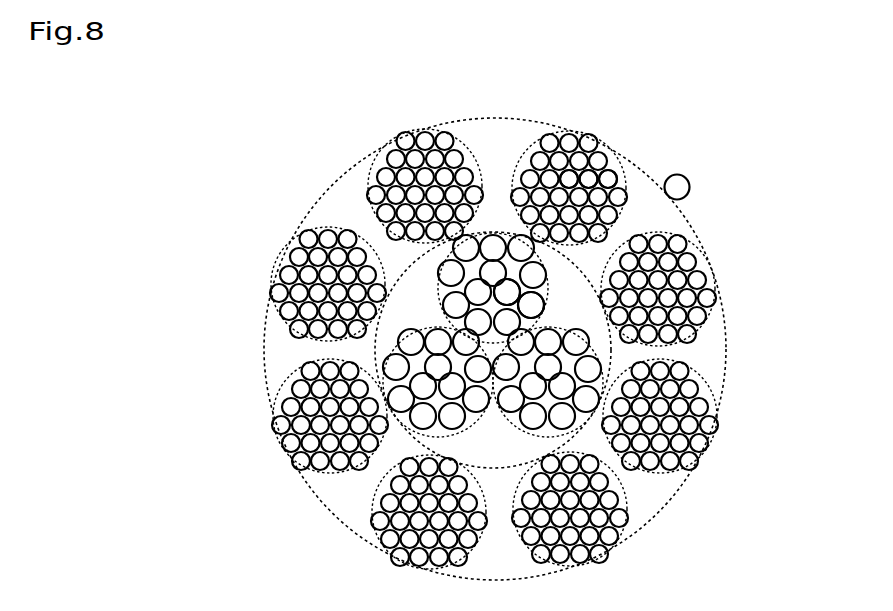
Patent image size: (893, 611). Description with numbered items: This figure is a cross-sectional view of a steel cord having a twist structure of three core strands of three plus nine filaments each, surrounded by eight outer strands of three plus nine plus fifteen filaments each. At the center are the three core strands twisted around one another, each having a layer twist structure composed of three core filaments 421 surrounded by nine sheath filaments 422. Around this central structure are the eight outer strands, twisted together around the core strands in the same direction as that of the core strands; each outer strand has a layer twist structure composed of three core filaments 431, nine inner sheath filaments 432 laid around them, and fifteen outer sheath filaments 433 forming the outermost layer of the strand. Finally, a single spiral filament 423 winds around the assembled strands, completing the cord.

The core filament 421 is at (507, 292).
The sheath filament 422 is at (531, 304).
The spiral filament 423 is at (677, 187).
The core filament 431 is at (570, 178).
The inner sheath filament 432 is at (592, 177).
The outer sheath filament 433 is at (617, 177).